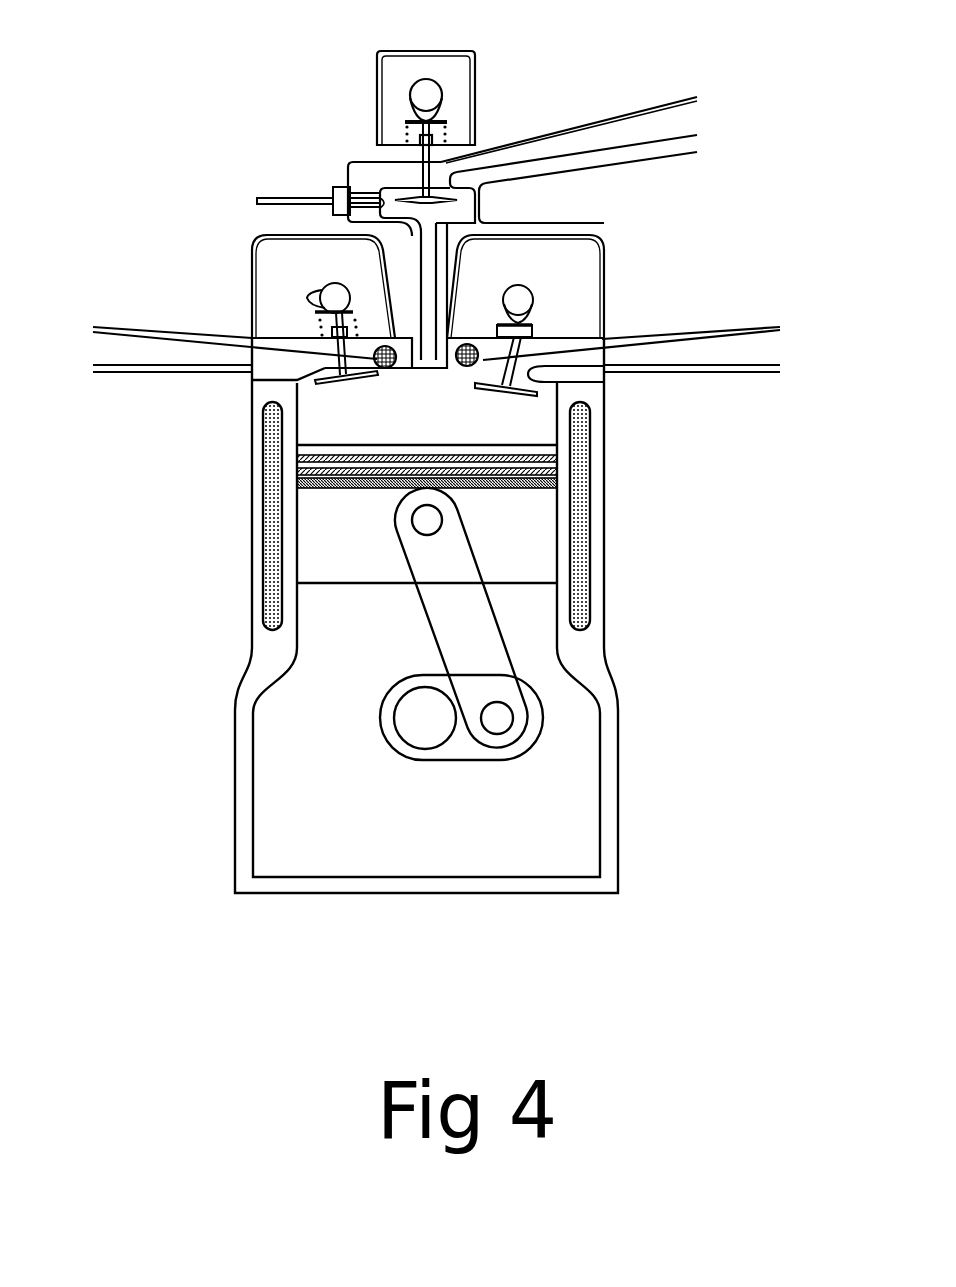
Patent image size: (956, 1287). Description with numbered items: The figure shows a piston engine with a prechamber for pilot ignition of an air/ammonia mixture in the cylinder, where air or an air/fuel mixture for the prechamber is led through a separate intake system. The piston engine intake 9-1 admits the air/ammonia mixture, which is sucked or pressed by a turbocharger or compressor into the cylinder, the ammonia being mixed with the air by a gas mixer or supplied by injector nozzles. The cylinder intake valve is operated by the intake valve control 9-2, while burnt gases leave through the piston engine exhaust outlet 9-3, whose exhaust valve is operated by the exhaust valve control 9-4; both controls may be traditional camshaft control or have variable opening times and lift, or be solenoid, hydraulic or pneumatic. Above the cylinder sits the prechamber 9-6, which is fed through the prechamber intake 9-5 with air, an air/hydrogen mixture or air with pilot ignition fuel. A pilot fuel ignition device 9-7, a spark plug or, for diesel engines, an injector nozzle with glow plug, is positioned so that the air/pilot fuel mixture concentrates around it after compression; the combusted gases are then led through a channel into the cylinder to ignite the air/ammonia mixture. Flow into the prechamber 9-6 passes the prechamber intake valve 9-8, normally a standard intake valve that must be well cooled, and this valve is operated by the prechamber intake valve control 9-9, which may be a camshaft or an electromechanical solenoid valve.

The piston engine intake 9-1 is at (668, 348).
The intake valve control 9-2 is at (530, 318).
The piston engine exhaust outlet 9-3 is at (199, 348).
The exhaust valve control 9-4 is at (320, 311).
The prechamber intake 9-5 is at (599, 132).
The prechamber 9-6 is at (476, 199).
The pilot fuel ignition device 9-7 is at (284, 197).
The prechamber intake valve 9-8 is at (427, 182).
The prechamber intake valve control 9-9 is at (426, 76).